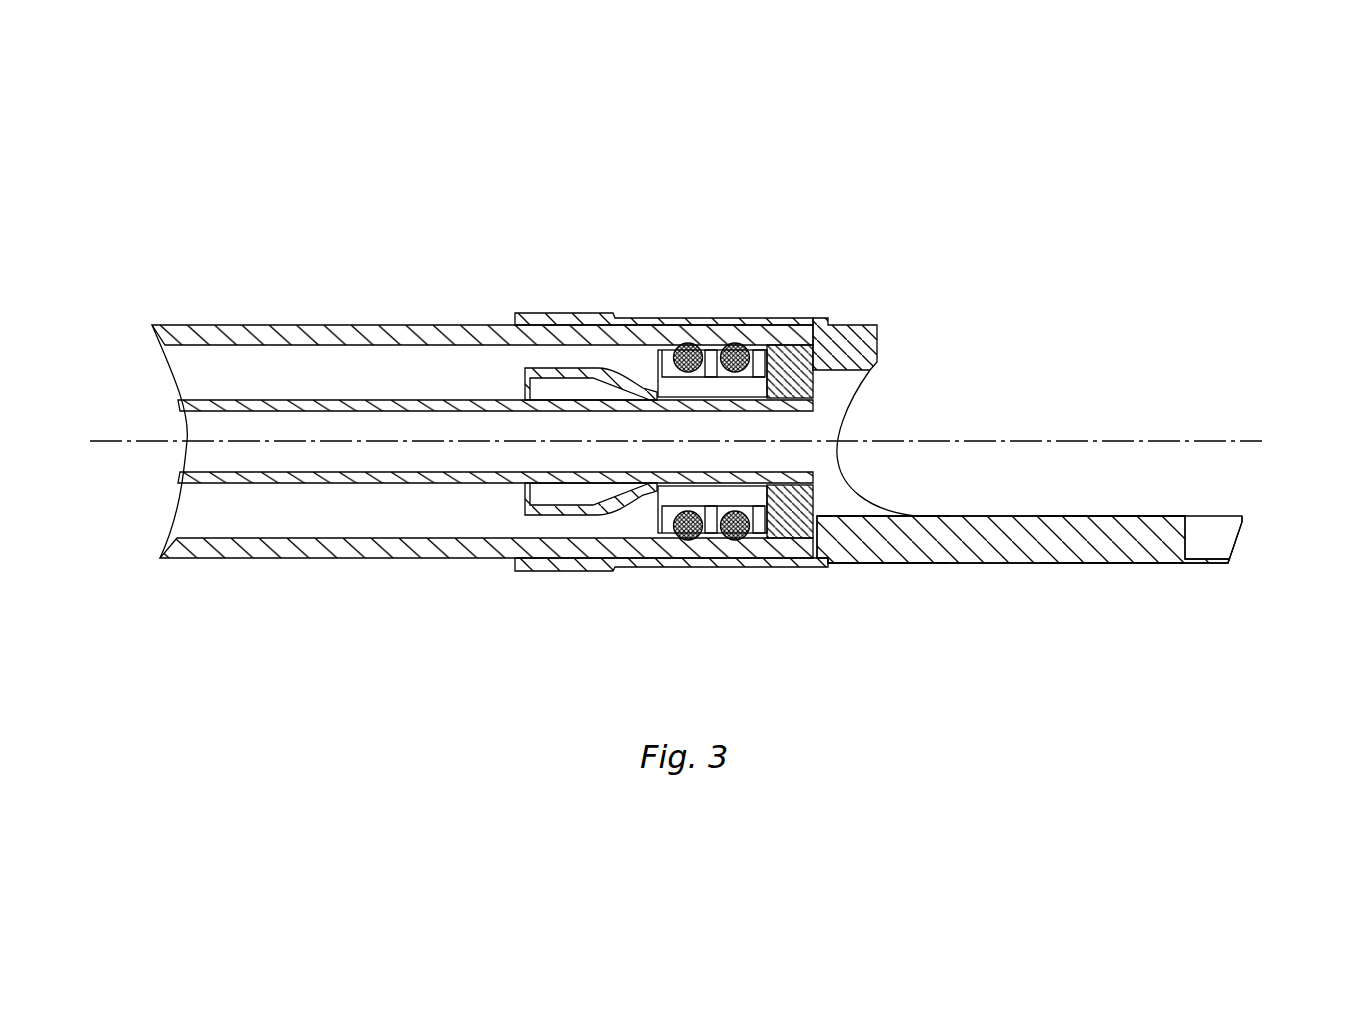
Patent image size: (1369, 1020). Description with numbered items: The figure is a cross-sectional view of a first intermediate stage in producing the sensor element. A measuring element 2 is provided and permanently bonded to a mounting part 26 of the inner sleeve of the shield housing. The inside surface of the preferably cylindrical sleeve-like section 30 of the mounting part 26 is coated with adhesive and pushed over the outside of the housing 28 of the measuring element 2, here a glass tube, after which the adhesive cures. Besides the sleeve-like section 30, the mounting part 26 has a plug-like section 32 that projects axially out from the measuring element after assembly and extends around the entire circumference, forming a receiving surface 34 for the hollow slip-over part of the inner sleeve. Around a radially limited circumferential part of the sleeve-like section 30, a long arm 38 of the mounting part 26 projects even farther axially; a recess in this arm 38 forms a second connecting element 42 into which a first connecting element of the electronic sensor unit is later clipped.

The measuring element 2 is at (180, 243).
The mounting part 26 is at (892, 547).
The housing 28 is at (388, 330).
The sleeve-like section 30 is at (648, 317).
The plug-like section 32 is at (988, 530).
The receiving surface 34 is at (855, 327).
The long arm 38 is at (1075, 543).
The second connecting element 42 is at (1218, 532).